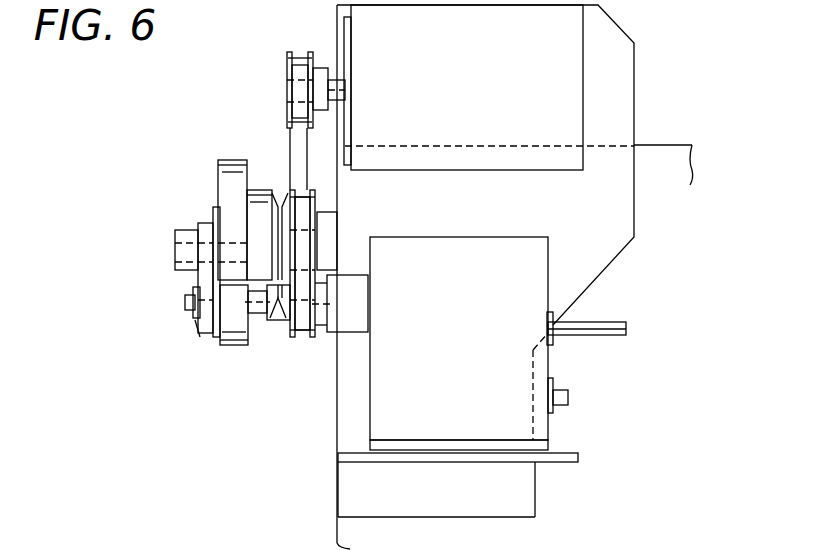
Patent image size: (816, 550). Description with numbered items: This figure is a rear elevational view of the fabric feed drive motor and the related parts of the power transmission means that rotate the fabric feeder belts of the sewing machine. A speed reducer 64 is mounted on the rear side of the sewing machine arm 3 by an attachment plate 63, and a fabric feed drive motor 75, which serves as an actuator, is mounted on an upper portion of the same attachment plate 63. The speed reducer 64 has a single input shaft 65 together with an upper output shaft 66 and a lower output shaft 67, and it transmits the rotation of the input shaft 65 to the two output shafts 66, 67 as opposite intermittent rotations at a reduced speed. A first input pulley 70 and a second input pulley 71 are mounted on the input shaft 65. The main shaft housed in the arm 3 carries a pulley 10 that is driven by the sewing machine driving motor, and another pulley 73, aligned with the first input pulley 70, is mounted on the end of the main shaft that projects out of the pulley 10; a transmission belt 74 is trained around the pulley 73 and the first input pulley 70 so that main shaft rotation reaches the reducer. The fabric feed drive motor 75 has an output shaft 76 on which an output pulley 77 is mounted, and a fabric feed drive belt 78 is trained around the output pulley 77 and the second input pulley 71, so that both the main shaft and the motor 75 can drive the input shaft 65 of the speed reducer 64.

The arm 3 is at (664, 152).
The pulley 10 is at (230, 160).
The attachment plate 63 is at (614, 228).
The speed reducer 64 is at (438, 361).
The input shaft 65 is at (259, 316).
The upper output shaft 66 is at (614, 322).
The lower output shaft 67 is at (567, 392).
The first input pulley 70 is at (197, 326).
The second input pulley 71 is at (312, 343).
The pulley 73 is at (196, 230).
The transmission belt 74 is at (214, 322).
The fabric feed drive motor 75 is at (449, 86).
The output shaft 76 is at (332, 80).
The output pulley 77 is at (287, 68).
The fabric feed drive belt 78 is at (290, 135).